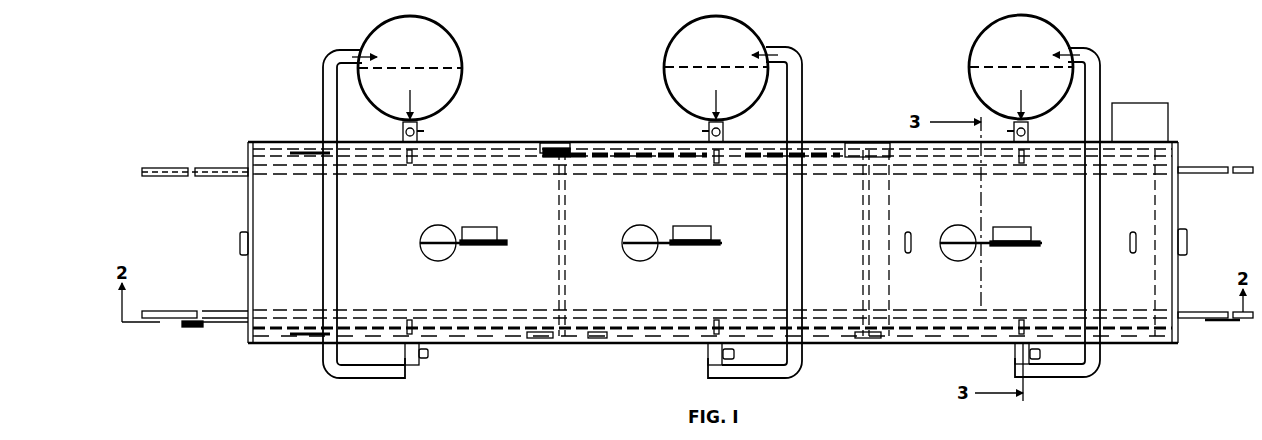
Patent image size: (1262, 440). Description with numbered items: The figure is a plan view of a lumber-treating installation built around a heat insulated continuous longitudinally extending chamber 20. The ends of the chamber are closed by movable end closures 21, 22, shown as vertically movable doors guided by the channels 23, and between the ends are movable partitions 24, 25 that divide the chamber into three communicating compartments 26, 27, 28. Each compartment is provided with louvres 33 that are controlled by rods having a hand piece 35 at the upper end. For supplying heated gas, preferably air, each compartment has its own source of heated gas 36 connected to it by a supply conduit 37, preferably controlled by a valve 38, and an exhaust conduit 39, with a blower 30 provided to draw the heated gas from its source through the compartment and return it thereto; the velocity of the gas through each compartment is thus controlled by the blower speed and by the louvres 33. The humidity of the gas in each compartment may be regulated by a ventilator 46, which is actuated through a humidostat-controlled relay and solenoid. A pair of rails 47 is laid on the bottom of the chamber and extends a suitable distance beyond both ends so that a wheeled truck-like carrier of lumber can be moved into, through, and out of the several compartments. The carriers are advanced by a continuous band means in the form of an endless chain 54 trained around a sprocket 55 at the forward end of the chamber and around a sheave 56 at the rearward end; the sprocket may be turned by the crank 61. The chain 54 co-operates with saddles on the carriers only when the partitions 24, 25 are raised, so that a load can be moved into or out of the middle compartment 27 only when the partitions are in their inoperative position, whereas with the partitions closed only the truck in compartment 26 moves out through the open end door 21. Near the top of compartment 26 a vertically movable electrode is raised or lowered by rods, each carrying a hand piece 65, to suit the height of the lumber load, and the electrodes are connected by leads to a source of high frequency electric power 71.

The heat insulated continuous longitudinally extending chamber 20 is at (577, 142).
The movable end closure 21 is at (1178, 272).
The movable end closure 22 is at (248, 201).
The channels 23 is at (1176, 343).
The movable partition 24 is at (864, 232).
The movable partition 25 is at (566, 228).
The compartment 26 is at (910, 194).
The compartment 27 is at (668, 206).
The compartment 28 is at (470, 206).
The blower 30 is at (428, 354).
The louvres 33 is at (305, 168).
The hand piece 35 is at (410, 164).
The source of heated gas 36 is at (460, 82).
The supply conduit 37 is at (403, 130).
The valve 38 is at (424, 130).
The exhaust conduit 39 is at (323, 113).
The ventilator 46 is at (424, 232).
The rails 47 is at (174, 166).
The endless chain 54 is at (238, 324).
The sprocket 55 is at (1240, 320).
The sheave 56 is at (192, 328).
The crank 61 is at (1212, 322).
The hand piece 65 is at (908, 232).
The source of high frequency electric power 71 is at (1168, 118).